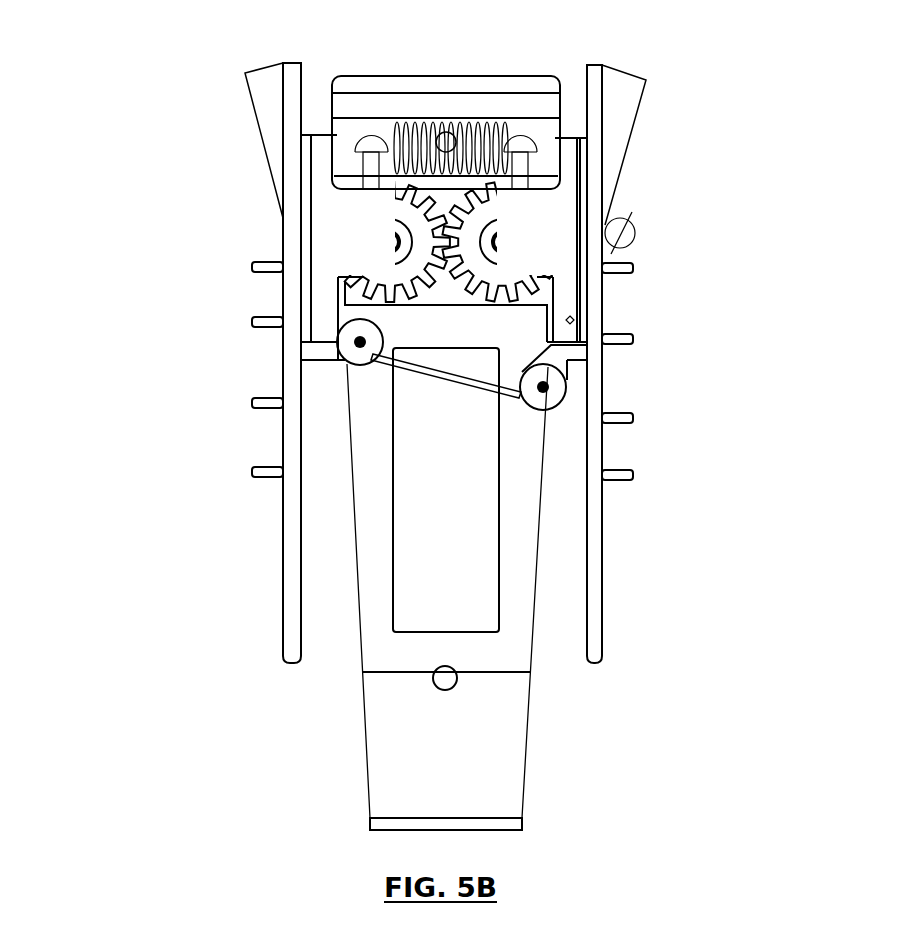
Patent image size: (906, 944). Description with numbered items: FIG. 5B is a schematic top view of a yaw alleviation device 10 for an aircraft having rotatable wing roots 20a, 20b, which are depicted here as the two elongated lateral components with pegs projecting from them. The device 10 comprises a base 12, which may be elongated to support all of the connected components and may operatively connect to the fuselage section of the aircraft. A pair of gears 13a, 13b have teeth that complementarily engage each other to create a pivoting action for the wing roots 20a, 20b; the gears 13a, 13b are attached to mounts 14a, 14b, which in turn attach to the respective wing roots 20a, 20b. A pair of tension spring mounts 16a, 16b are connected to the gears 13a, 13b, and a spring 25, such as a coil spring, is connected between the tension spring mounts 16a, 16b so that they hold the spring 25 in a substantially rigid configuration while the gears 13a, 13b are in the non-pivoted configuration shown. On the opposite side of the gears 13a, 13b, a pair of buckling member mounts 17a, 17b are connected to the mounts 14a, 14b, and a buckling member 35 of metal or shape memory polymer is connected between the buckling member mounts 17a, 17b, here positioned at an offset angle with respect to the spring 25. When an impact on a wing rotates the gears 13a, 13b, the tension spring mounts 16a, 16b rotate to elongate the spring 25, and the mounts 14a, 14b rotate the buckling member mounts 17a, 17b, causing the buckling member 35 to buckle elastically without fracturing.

The yaw alleviation device 10 is at (92, 154).
The base 12 is at (505, 757).
The gear 13a is at (402, 277).
The gear 13b is at (482, 207).
The mount 14a is at (313, 237).
The mount 14b is at (565, 287).
The tension spring mount 16a is at (373, 168).
The tension spring mount 16b is at (523, 165).
The buckling member mount 17a is at (356, 357).
The buckling member mount 17b is at (557, 380).
The wing root 20a is at (246, 104).
The wing root 20b is at (650, 104).
The spring 25 is at (457, 135).
The buckling member 35 is at (443, 378).